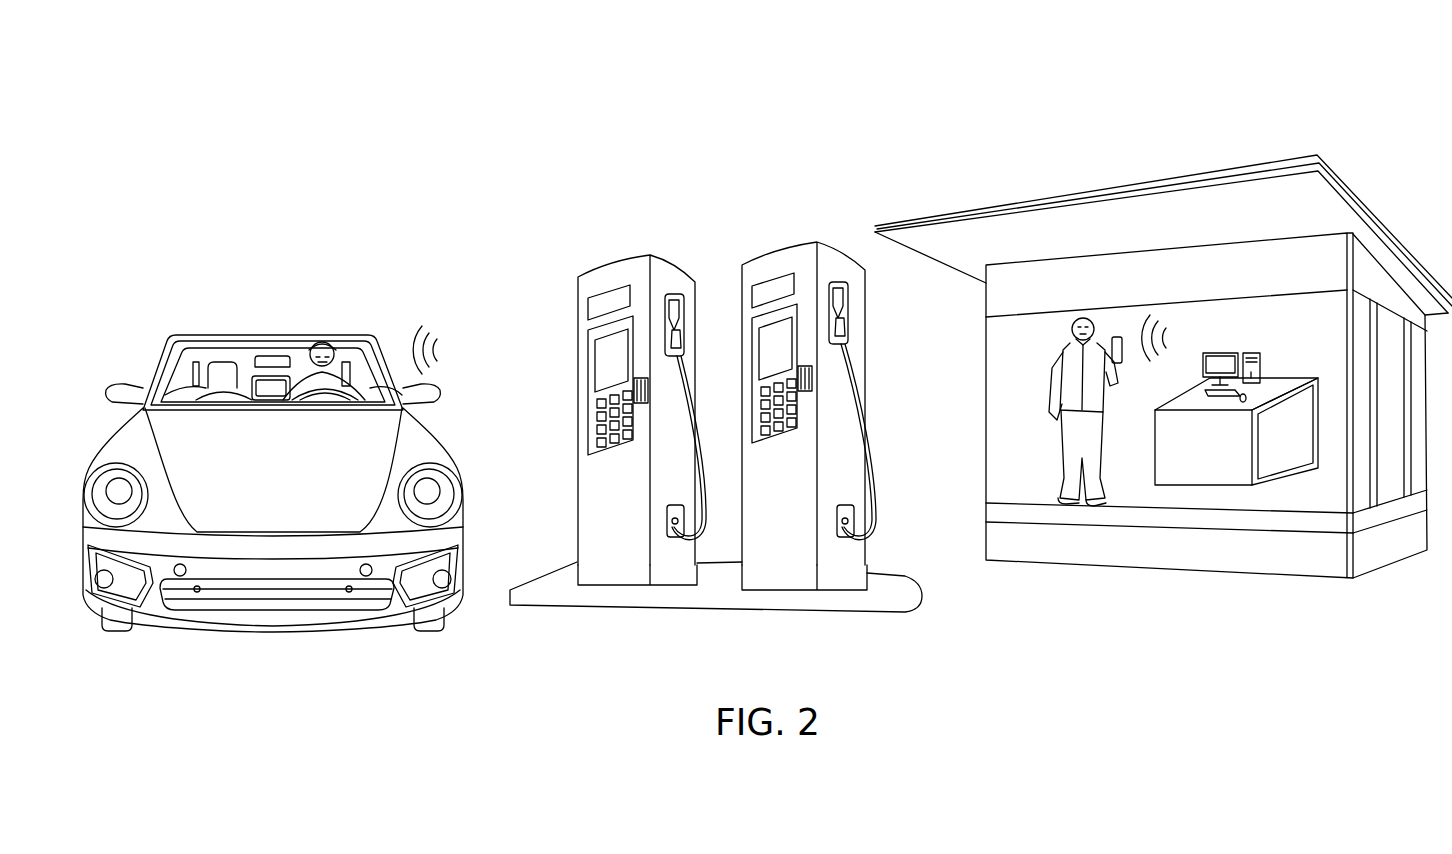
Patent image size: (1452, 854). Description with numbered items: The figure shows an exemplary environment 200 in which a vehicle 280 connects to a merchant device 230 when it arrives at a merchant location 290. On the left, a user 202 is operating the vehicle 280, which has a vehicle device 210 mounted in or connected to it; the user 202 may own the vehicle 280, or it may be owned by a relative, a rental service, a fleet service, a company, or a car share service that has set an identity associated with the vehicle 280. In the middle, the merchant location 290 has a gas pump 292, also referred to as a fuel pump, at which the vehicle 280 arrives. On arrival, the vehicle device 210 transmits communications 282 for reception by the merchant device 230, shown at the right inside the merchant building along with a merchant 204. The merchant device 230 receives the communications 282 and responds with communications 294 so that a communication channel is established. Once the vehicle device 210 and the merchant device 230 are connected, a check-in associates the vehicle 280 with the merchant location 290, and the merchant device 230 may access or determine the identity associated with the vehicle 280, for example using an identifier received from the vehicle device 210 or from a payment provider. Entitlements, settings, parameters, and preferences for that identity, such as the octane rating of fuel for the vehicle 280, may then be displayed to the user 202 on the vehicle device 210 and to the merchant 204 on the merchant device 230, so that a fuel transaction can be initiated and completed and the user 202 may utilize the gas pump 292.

The environment 200 is at (787, 130).
The user 202 is at (333, 356).
The merchant 204 is at (1083, 317).
The vehicle device 210 is at (272, 394).
The merchant device 230 is at (1222, 352).
The vehicle 280 is at (197, 336).
The communications 282 is at (437, 382).
The merchant location 290 is at (1131, 180).
The gas pump 292 is at (610, 272).
The communications 294 is at (1160, 311).